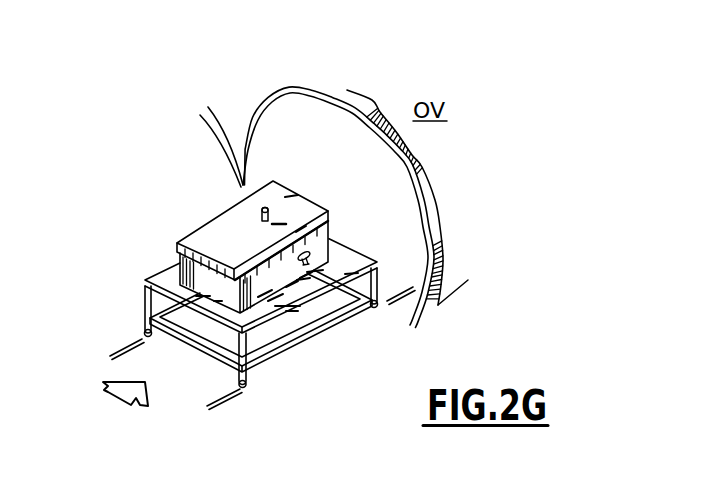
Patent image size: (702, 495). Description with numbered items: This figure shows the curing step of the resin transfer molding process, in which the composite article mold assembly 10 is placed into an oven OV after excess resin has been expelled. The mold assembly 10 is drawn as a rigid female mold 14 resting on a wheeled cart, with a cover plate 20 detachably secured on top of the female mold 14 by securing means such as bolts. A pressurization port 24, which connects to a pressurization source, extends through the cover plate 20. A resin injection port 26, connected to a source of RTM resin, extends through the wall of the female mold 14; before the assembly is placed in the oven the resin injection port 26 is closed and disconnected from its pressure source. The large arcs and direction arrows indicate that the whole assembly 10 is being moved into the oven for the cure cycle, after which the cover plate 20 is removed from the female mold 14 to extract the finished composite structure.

The composite article mold assembly 10 is at (133, 228).
The female mold 14 is at (267, 288).
The cover plate 20 is at (225, 222).
The pressurization port 24 is at (268, 208).
The resin injection port 26 is at (306, 254).